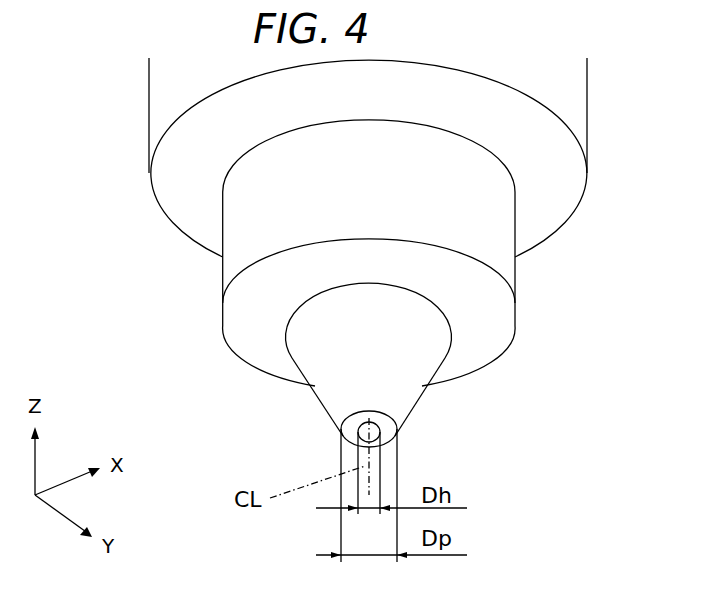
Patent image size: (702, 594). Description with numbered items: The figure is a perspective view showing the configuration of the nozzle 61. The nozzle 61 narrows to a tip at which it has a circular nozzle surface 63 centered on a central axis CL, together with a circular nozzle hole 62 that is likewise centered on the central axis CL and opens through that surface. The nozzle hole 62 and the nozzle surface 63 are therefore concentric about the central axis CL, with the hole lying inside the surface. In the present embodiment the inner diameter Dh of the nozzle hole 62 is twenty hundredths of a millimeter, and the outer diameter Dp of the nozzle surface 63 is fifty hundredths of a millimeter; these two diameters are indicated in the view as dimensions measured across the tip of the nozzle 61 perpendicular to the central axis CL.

The nozzle 61 is at (407, 393).
The nozzle hole 62 is at (397, 428).
The nozzle surface 63 is at (357, 440).